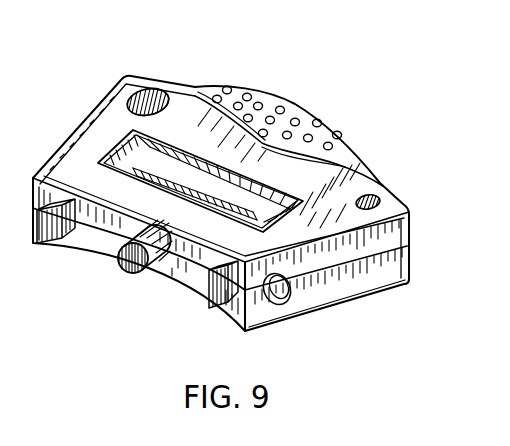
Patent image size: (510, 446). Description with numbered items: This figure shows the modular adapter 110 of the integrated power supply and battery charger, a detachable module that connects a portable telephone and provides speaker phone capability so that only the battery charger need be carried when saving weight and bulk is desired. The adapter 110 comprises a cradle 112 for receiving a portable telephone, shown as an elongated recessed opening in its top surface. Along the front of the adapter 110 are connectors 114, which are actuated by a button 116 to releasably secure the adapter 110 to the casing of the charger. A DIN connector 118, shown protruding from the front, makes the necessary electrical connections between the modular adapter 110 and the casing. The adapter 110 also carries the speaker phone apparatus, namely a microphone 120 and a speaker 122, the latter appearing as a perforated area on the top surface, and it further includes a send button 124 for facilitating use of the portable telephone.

The modular adapter 110 is at (352, 290).
The cradle 112 is at (103, 143).
The connectors 114 is at (70, 233).
The button 116 is at (295, 293).
The DIN connector 118 is at (118, 265).
The microphone 120 is at (370, 197).
The speaker 122 is at (300, 107).
The send button 124 is at (140, 103).